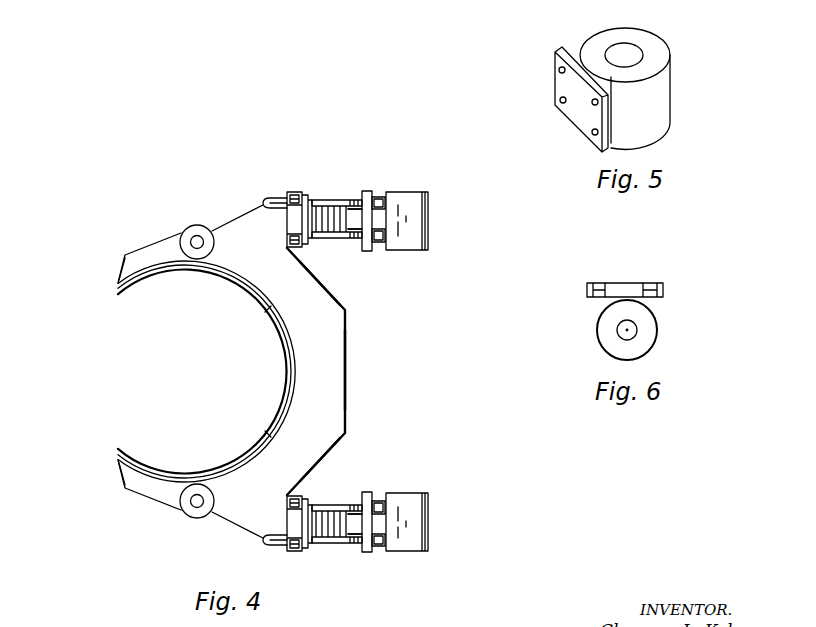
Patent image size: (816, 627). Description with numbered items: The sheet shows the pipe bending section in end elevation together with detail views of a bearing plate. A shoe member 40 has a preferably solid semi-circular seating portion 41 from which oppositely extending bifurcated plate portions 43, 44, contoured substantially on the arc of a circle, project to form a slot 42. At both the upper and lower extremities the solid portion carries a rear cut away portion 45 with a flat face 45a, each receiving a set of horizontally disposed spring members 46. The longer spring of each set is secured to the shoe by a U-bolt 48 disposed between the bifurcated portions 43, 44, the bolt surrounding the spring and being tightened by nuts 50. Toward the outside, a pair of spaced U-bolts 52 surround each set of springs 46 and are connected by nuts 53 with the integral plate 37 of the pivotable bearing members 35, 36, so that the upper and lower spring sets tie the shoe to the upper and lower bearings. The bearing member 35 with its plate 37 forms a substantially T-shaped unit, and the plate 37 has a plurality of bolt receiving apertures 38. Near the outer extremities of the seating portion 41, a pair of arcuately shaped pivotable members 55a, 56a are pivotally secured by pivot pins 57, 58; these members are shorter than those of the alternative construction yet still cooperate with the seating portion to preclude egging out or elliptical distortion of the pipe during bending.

In FIG. 4, the pivotable bearing member 35 is at (423, 220).
In FIG. 5, the pivotable bearing member 35 is at (659, 106).
In FIG. 6, the pivotable bearing member 35 is at (640, 347).
In FIG. 4, the pivotable bearing member 36 is at (418, 556).
In FIG. 4, the integral plate 37 is at (367, 248).
In FIG. 5, the integral plate 37 is at (558, 83).
In FIG. 6, the integral plate 37 is at (645, 292).
In FIG. 5, the bolt receiving apertures 38 is at (559, 70).
In FIG. 4, the shoe member 40 is at (348, 408).
In FIG. 4, the semi-circular seating portion 41 is at (336, 361).
In FIG. 4, the slot 42 is at (286, 350).
In FIG. 4, the bifurcated plate portion 43 is at (232, 253).
In FIG. 4, the bifurcated plate portion 44 is at (240, 522).
In FIG. 4, the rear cut away portion 45 is at (342, 305).
In FIG. 4, the flat face 45a is at (289, 494).
In FIG. 4, the spring members 46 is at (323, 212).
In FIG. 4, the U-bolt 48 is at (268, 197).
In FIG. 4, the nuts 50 is at (310, 199).
In FIG. 4, the U-bolts 52 is at (329, 239).
In FIG. 4, the nuts 53 is at (377, 202).
In FIG. 4, the arcuately shaped pivotable member 55a is at (118, 258).
In FIG. 4, the arcuately shaped pivotable member 56a is at (121, 495).
In FIG. 4, the pivot pin 57 is at (204, 241).
In FIG. 4, the pivot pin 58 is at (205, 500).